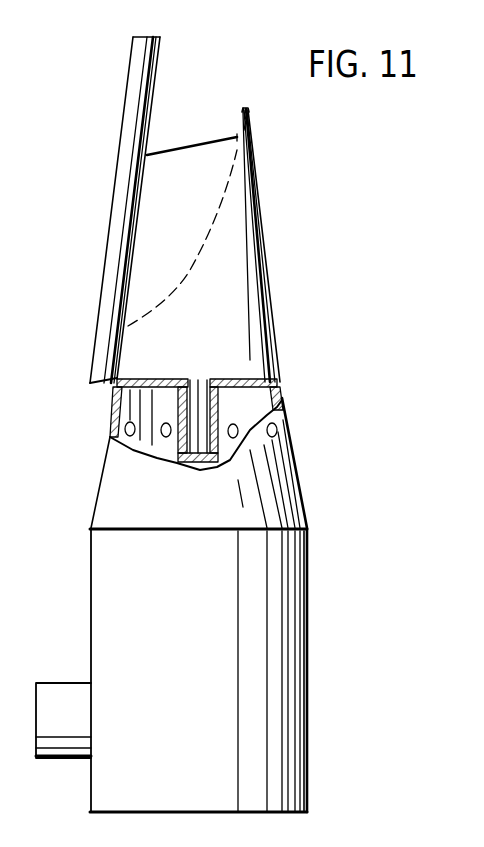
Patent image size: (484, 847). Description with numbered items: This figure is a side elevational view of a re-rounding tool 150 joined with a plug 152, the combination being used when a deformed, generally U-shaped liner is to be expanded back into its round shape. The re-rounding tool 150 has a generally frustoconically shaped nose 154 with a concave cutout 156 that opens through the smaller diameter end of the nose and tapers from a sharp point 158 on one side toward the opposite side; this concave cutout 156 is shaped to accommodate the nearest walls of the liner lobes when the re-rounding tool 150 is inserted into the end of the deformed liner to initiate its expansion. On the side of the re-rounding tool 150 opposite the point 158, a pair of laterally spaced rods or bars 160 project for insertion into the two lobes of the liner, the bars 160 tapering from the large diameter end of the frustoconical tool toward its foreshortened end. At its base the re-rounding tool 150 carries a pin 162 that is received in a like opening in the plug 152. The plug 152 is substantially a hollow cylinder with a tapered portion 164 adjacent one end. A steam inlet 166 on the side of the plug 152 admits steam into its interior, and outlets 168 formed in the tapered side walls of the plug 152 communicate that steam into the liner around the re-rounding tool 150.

The re-rounding tool 150 is at (270, 303).
The plug 152 is at (310, 588).
The frustoconically shaped nose 154 is at (245, 235).
The concave cutout 156 is at (182, 152).
The sharp point 158 is at (247, 108).
The laterally spaced rods or bars 160 is at (113, 197).
The pin 162 is at (190, 380).
The tapered portion 164 is at (303, 498).
The steam inlet 166 is at (58, 760).
The outlets 168 is at (287, 432).